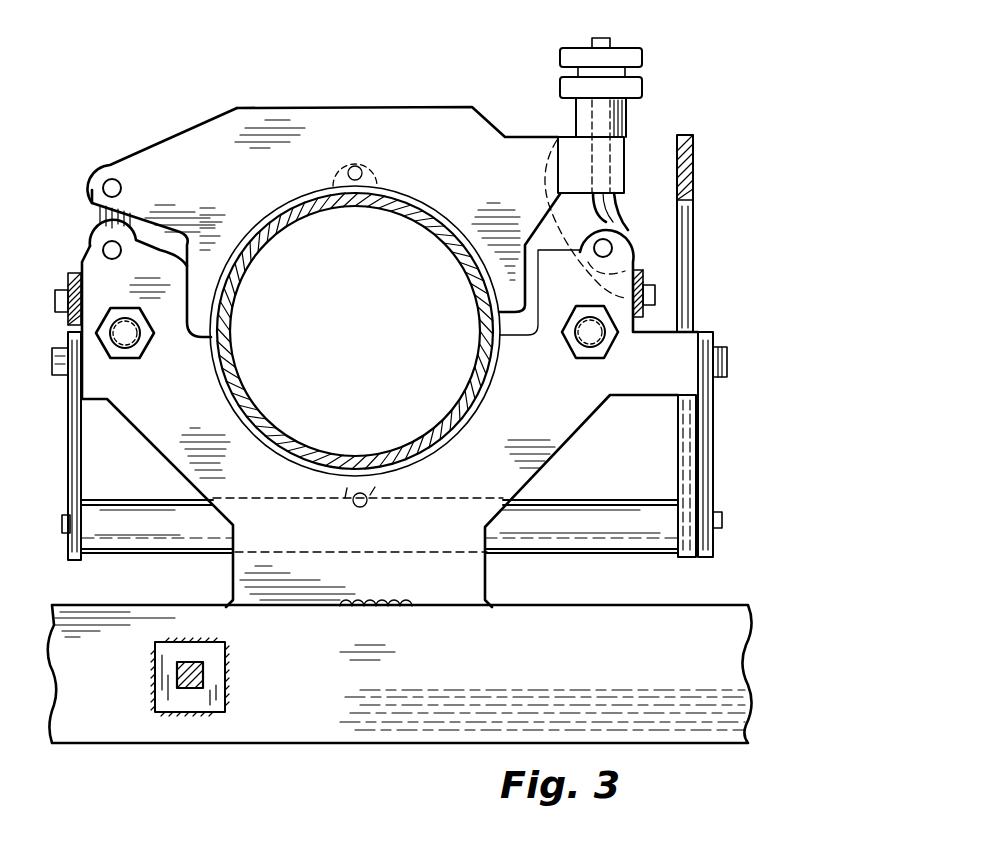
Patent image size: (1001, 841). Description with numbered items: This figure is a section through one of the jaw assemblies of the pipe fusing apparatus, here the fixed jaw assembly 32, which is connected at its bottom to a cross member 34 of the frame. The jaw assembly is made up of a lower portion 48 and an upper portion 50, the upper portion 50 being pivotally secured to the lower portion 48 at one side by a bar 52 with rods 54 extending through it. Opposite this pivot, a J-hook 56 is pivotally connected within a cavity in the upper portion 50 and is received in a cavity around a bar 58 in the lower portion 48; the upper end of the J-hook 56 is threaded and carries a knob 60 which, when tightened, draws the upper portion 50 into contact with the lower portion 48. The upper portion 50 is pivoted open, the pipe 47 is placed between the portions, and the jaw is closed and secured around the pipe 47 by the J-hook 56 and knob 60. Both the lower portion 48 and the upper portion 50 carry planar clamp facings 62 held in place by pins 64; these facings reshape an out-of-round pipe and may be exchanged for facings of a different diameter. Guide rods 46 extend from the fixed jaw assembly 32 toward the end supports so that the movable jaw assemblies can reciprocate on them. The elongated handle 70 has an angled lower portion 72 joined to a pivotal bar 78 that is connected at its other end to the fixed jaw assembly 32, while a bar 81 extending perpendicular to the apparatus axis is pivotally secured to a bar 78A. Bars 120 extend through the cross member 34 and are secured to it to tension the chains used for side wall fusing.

The fixed jaw assembly 32 is at (237, 108).
The cross member 34 is at (631, 675).
The guide rod 46 is at (590, 332).
The pipe 47 is at (467, 268).
The lower portion 48 is at (471, 484).
The upper portion 50 is at (485, 170).
The bar 52 is at (95, 214).
The rod 54 is at (111, 179).
The J-hook 56 is at (617, 212).
The bar 58 is at (612, 251).
The knob 60 is at (622, 48).
The clamp facing 62 is at (318, 192).
The pin 64 is at (364, 166).
The elongated handle 70 is at (693, 236).
The angled lower portion 72 is at (686, 458).
The pivotal bar 78 is at (710, 427).
The bar 78A is at (81, 448).
The bar 81 is at (136, 514).
The bar 120 is at (203, 675).